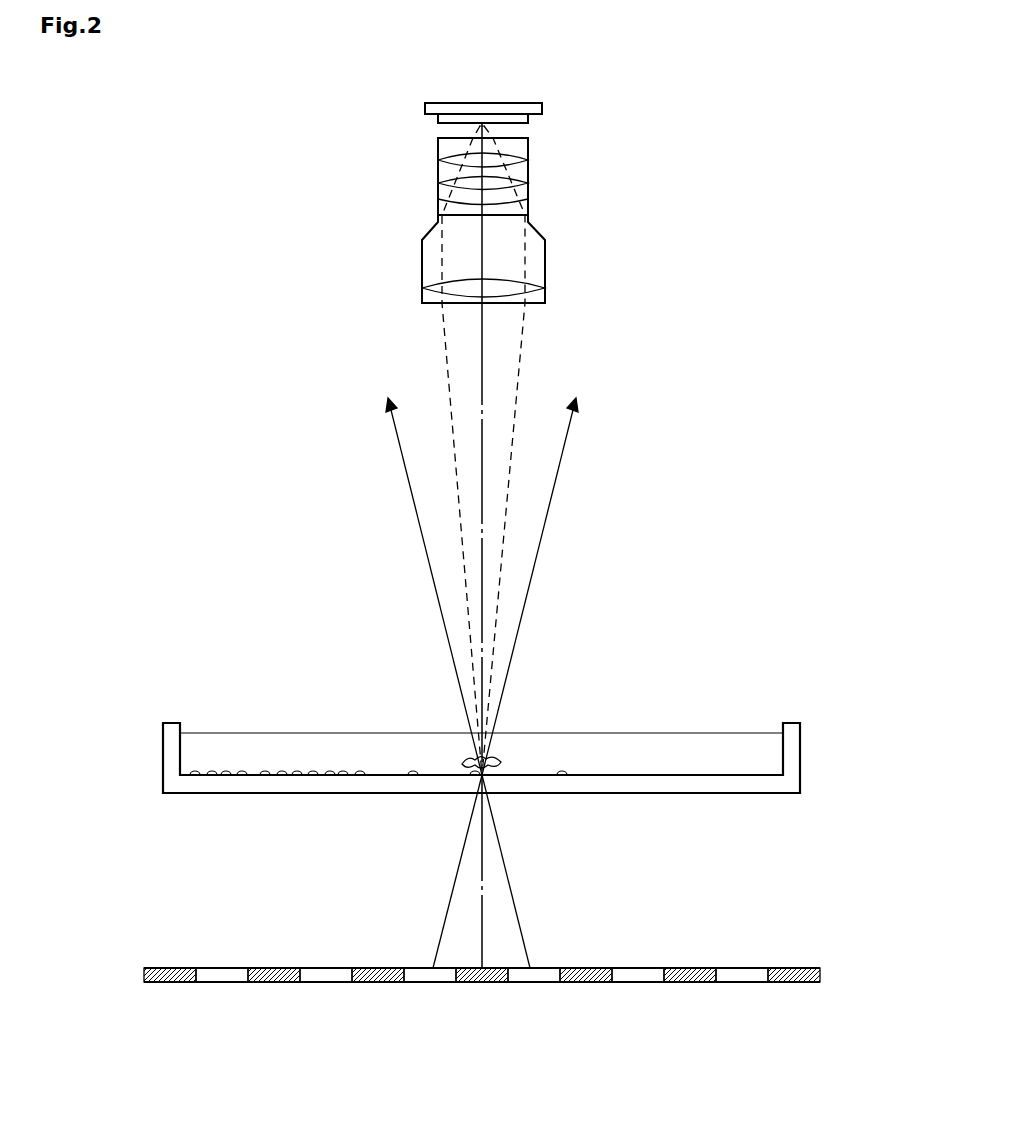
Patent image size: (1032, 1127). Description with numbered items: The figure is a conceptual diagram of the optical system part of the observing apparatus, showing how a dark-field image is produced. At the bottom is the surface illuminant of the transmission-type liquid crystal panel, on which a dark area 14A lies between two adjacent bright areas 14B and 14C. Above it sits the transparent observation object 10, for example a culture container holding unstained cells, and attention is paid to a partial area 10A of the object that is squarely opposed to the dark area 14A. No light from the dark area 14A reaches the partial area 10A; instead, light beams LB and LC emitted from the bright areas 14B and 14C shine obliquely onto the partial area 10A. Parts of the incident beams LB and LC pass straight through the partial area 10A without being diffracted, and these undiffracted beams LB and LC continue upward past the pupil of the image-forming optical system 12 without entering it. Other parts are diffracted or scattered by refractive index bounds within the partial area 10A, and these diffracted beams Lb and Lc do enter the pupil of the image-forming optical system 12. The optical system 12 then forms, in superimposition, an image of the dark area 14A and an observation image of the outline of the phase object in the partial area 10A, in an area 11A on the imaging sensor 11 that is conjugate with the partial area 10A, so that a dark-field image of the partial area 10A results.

The observation object 10 is at (816, 763).
The partial area 10A is at (496, 748).
The imaging sensor 11 is at (527, 98).
The area on the imaging sensor 11A is at (475, 131).
The image-forming optical system 12 is at (562, 225).
The dark area 14A is at (482, 984).
The bright area 14B is at (430, 984).
The bright area 14C is at (530, 984).
The light beam LB is at (505, 683).
The light beam LC is at (459, 683).
The diffracted light beam Lb is at (507, 450).
The diffracted light beam Lc is at (457, 450).